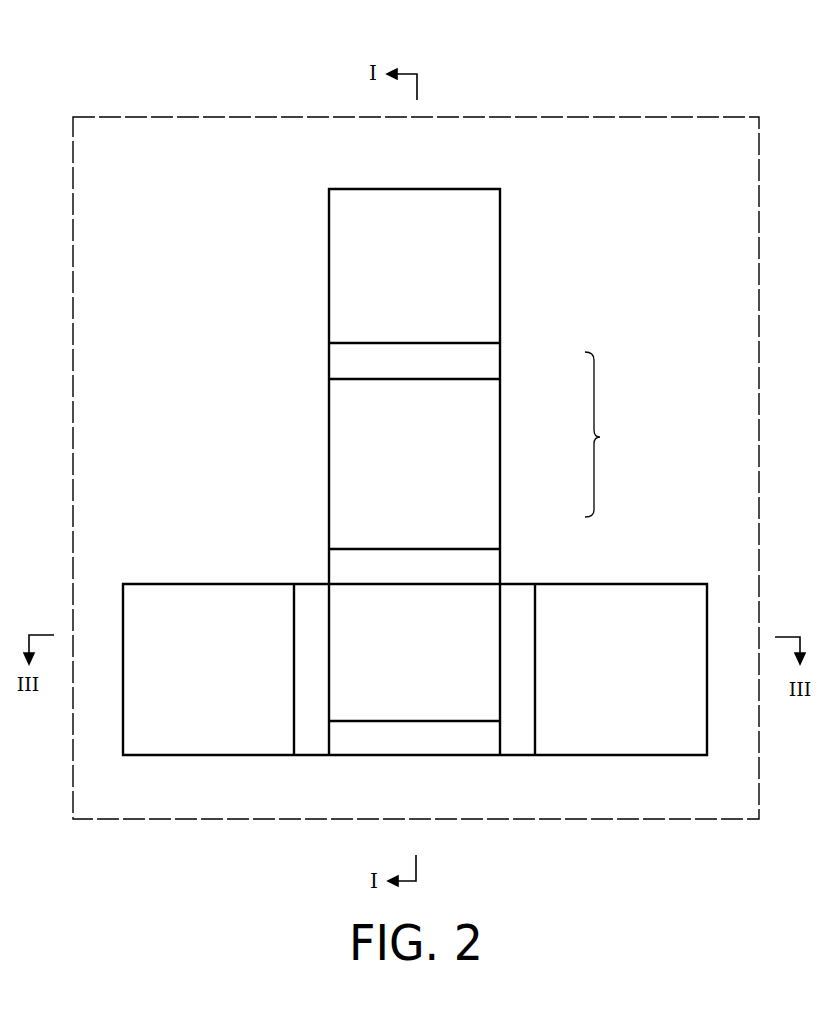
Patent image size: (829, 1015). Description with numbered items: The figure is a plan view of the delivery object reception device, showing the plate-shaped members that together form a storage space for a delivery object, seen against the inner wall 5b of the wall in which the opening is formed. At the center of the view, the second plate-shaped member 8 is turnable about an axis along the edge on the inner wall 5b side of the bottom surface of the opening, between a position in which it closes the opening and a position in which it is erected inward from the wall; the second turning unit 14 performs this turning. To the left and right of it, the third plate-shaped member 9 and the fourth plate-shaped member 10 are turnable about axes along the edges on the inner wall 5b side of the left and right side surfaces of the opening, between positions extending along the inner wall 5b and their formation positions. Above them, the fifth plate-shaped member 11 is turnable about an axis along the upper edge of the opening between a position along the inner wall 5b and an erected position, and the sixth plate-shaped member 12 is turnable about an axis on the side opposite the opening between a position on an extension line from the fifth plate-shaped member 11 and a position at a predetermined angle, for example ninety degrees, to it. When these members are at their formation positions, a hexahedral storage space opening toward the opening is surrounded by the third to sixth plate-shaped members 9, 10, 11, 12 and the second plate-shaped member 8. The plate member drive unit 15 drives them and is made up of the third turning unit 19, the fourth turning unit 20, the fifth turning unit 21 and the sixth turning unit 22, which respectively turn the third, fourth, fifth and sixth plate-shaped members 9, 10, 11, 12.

The inner wall 5b is at (645, 272).
The second plate-shaped member 8 is at (417, 695).
The third plate-shaped member 9 is at (207, 738).
The fourth plate-shaped member 10 is at (612, 738).
The fifth plate-shaped member 11 is at (347, 479).
The sixth plate-shaped member 12 is at (347, 302).
The second turning unit 14 is at (385, 738).
The plate member drive unit 15 is at (604, 434).
The third turning unit 19 is at (330, 614).
The fourth turning unit 20 is at (536, 618).
The fifth turning unit 21 is at (445, 549).
The sixth turning unit 22 is at (465, 342).